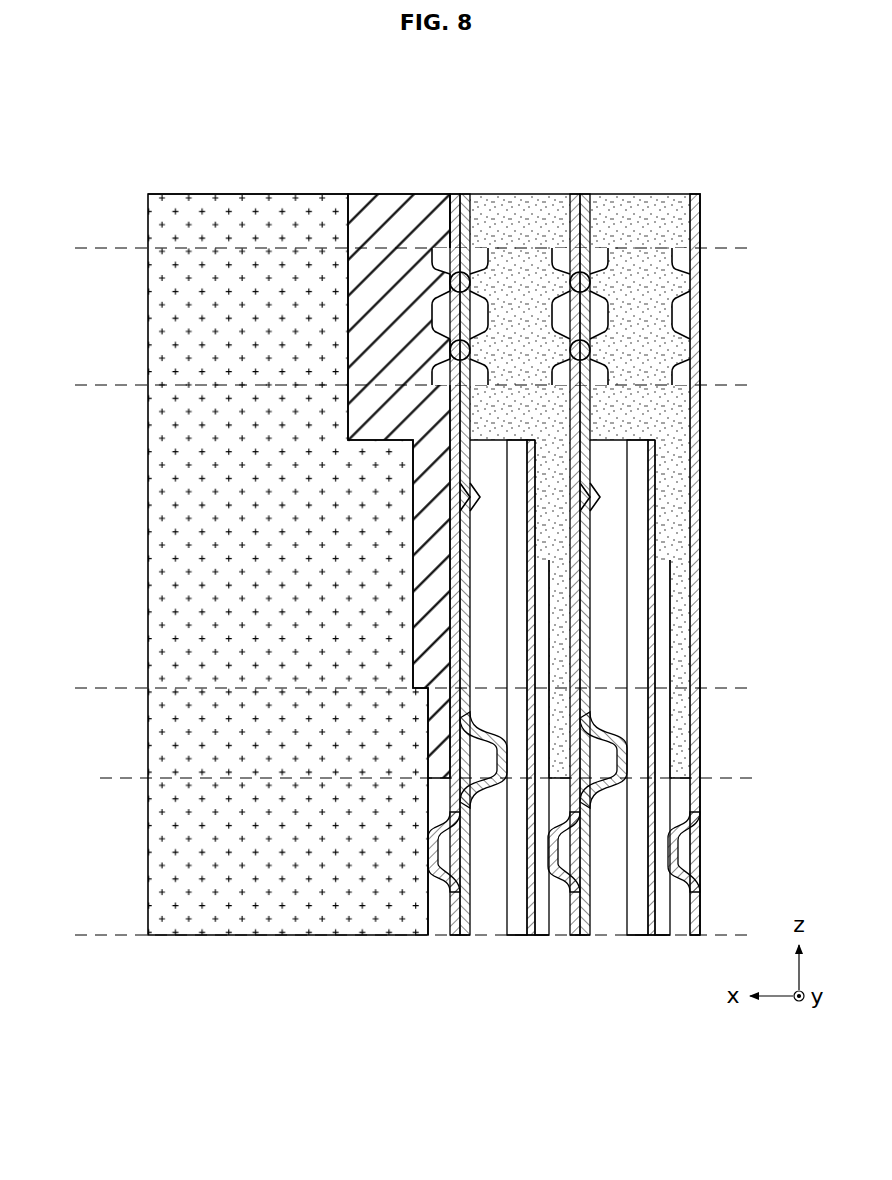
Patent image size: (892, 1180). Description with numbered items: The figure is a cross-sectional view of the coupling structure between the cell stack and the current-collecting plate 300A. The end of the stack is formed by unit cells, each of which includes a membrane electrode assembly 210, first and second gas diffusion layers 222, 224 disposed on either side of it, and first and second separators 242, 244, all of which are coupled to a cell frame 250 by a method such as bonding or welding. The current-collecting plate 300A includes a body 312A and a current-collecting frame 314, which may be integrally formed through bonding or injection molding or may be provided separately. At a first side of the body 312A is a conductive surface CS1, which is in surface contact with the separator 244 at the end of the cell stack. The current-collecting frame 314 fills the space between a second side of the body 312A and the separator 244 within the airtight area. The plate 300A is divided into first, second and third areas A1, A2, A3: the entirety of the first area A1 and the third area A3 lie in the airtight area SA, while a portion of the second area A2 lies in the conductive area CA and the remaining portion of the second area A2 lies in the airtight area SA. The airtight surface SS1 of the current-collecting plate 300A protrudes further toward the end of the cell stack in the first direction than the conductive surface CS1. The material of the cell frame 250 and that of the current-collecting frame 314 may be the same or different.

The current-collecting plate 300A is at (388, 158).
The body 312A is at (265, 200).
The current-collecting frame 314 is at (388, 205).
The airtight surface SS1 is at (444, 216).
The conductive surface CS1 is at (442, 808).
The cell frame 250 is at (523, 204).
The second separator 244 is at (448, 915).
The first separator 242 is at (468, 918).
The first gas diffusion layer 222 is at (517, 927).
The membrane electrode assembly 210 is at (531, 930).
The second gas diffusion layer 224 is at (543, 930).
The first area A1 is at (75, 250).
The second area A2 is at (75, 690).
The third area A3 is at (75, 387).
The airtight area SA is at (116, 690).
The conductive area CA is at (116, 780).